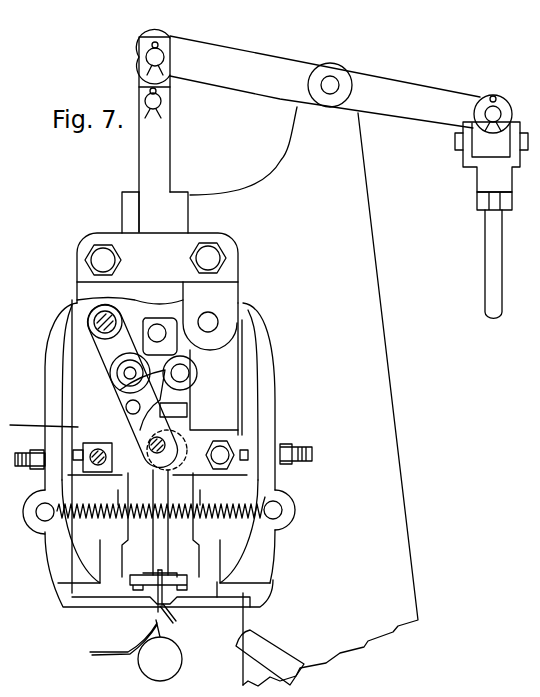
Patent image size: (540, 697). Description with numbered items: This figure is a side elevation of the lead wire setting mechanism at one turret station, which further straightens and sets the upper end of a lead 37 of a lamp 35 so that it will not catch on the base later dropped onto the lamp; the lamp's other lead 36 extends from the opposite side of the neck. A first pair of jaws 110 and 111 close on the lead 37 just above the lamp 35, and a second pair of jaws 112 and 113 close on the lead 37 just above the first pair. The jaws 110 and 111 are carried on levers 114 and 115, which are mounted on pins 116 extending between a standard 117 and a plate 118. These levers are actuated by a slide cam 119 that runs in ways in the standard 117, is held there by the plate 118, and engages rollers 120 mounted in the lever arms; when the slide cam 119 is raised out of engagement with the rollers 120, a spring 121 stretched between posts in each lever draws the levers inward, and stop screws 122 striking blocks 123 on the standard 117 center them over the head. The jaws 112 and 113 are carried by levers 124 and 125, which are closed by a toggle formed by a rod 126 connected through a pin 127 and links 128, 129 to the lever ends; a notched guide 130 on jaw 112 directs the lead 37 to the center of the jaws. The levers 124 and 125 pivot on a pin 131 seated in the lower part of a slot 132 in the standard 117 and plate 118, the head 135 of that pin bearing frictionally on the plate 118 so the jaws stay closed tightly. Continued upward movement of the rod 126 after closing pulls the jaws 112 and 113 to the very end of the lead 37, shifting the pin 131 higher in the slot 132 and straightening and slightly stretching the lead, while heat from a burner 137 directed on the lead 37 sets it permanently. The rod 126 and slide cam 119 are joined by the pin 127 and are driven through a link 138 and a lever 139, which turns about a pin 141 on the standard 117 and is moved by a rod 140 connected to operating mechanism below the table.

The lamp 35 is at (182, 665).
The lead 36 is at (104, 651).
The lead 37 is at (176, 615).
The jaw 110 is at (107, 605).
The jaw 111 is at (238, 605).
The jaw 112 is at (152, 582).
The jaw 113 is at (190, 575).
The lever 114 is at (50, 570).
The lever 115 is at (278, 552).
The pins 116 is at (98, 326).
The standard 117 is at (370, 282).
The plate 118 is at (78, 263).
The slide cam 119 is at (139, 205).
The rollers 120 is at (190, 402).
The spring 121 is at (60, 532).
The stop screws 122 is at (28, 468).
The blocks 123 is at (98, 472).
The lever 124 is at (128, 545).
The lever 125 is at (199, 545).
The rod 126 is at (170, 147).
The pin 127 is at (165, 324).
The link 128 is at (135, 322).
The link 129 is at (146, 376).
The notched guide 130 is at (140, 574).
The pin 131 is at (140, 446).
The slot 132 is at (188, 411).
The head 135 is at (182, 470).
The burner 137 is at (268, 655).
The link 138 is at (139, 65).
The lever 139 is at (251, 50).
The rod 140 is at (486, 241).
The pin 141 is at (331, 76).